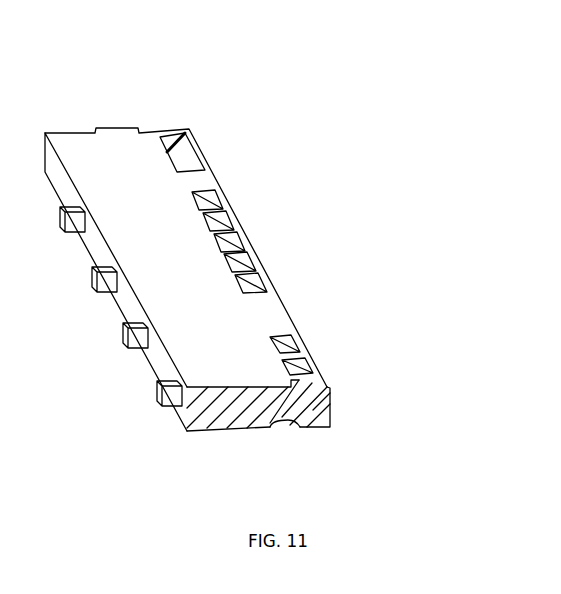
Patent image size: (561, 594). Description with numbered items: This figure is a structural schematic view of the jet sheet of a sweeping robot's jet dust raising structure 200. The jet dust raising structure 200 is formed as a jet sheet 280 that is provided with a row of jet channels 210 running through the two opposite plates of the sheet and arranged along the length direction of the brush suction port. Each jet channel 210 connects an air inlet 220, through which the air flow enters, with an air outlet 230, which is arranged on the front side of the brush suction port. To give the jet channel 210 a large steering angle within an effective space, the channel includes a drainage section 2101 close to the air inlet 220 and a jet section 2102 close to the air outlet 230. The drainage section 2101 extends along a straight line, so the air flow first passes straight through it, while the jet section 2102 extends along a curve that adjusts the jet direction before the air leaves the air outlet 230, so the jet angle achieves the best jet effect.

The jet dust raising structure 200 is at (197, 182).
The jet sheet 280 is at (105, 160).
The air inlet 220 is at (259, 284).
The jet channel 210 is at (327, 402).
The drainage section 2101 is at (313, 385).
The jet section 2102 is at (297, 423).
The air outlet 230 is at (270, 420).